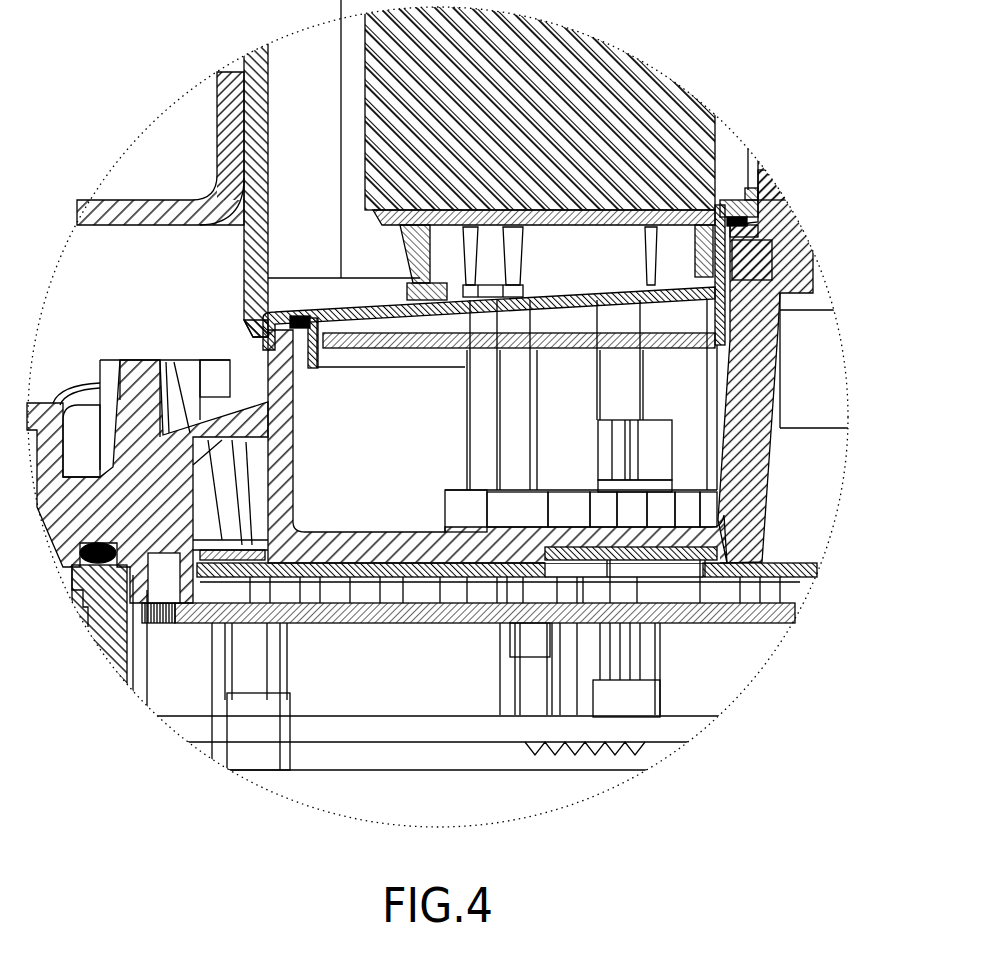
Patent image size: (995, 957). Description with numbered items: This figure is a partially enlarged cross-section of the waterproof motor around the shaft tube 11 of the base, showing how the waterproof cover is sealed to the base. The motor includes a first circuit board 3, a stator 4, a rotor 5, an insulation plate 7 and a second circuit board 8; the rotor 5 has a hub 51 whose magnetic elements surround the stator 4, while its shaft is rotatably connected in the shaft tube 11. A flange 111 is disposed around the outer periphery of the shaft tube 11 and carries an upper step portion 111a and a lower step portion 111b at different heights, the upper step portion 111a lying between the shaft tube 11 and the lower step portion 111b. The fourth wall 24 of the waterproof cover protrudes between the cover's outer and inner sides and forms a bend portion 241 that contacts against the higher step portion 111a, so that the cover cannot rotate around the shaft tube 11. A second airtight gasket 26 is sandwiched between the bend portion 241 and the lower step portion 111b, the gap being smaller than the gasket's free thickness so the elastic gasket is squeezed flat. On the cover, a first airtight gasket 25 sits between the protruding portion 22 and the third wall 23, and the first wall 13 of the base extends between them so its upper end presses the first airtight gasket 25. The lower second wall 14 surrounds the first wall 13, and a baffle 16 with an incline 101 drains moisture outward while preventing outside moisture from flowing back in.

The first circuit board 3 is at (388, 352).
The stator 4 is at (352, 62).
The rotor 5 is at (208, 122).
The insulation plate 7 is at (337, 628).
The second circuit board 8 is at (383, 628).
The shaft tube 11 is at (770, 185).
The first wall 13 is at (255, 330).
The second wall 14 is at (213, 368).
The baffle 16 is at (137, 375).
The protruding portion 22 is at (262, 428).
The third wall 23 is at (312, 372).
The fourth wall 24 is at (735, 333).
The first airtight gasket 25 is at (292, 308).
The second airtight gasket 26 is at (712, 205).
The hub 51 is at (250, 62).
The incline 101 is at (212, 380).
The flange 111 is at (742, 248).
The upper step portion 111a is at (780, 193).
The lower step portion 111b is at (745, 228).
The bend portion 241 is at (735, 203).